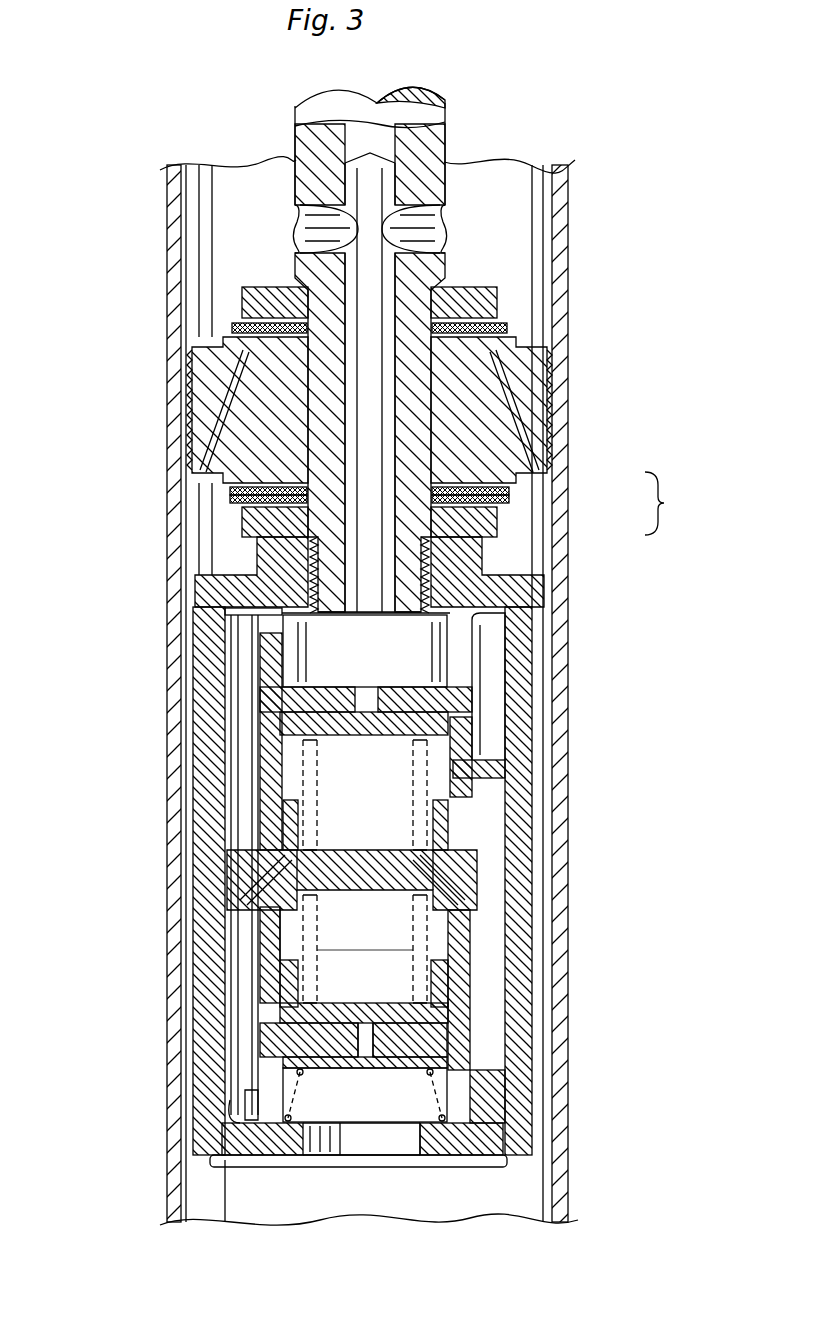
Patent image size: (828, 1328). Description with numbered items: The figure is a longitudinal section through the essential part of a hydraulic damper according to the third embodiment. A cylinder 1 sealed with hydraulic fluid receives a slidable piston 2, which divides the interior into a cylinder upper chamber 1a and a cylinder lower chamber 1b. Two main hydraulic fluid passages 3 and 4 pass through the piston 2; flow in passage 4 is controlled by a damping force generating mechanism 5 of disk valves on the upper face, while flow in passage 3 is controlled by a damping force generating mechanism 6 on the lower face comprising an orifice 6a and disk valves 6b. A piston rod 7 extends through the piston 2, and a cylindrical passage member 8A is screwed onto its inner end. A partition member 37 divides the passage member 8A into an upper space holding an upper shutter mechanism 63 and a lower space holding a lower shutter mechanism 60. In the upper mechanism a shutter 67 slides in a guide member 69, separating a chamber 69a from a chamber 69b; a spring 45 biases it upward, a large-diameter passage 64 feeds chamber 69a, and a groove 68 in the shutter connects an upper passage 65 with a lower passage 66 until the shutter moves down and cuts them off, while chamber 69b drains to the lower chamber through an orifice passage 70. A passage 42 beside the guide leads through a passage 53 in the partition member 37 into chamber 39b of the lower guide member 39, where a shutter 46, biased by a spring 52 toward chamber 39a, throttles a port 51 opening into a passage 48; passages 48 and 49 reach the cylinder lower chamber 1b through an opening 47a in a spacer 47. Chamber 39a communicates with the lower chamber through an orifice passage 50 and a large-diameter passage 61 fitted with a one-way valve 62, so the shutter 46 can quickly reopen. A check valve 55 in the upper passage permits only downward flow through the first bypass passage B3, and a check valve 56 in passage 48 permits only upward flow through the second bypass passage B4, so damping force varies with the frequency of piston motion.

The cylinder 1 is at (560, 168).
The cylinder upper chamber 1a is at (510, 182).
The cylinder lower chamber 1b is at (222, 1215).
The piston 2 is at (535, 380).
The main hydraulic fluid passage 3 is at (530, 332).
The main hydraulic fluid passage 4 is at (232, 484).
The damping force generating mechanism 5 is at (232, 328).
The damping force generating mechanism 6 is at (675, 503).
The orifice 6a is at (500, 492).
The disk valves 6b is at (500, 504).
The piston rod 7 is at (303, 100).
The cylindrical passage member 8A is at (530, 600).
The partition member 37 is at (262, 908).
The guide member 39 is at (470, 1043).
The chamber 39a is at (440, 1065).
The chamber 39b is at (383, 980).
The passage 42 is at (245, 752).
The spring 45 is at (265, 880).
The shutter 46 is at (240, 1052).
The spacer 47 is at (503, 1153).
The opening 47a is at (400, 1125).
The passage 48 is at (262, 1083).
The passage 49 is at (487, 1107).
The orifice passage 50 is at (360, 1060).
The port 51 is at (290, 1015).
The spring 52 is at (455, 990).
The passage 53 is at (283, 985).
The check valve 55 is at (477, 670).
The check valve 56 is at (243, 1130).
The lower shutter mechanism 60 is at (488, 1025).
The passage 61 is at (395, 1100).
The one-way valve 62 is at (330, 1130).
The upper shutter mechanism 63 is at (490, 747).
The passage 64 is at (345, 690).
The upper passage 65 is at (490, 700).
The lower passage 66 is at (493, 817).
The shutter 67 is at (215, 722).
The groove 68 is at (292, 790).
The guide member 69 is at (470, 713).
The chamber 69a is at (285, 700).
The chamber 69b is at (275, 835).
The orifice passage 70 is at (470, 900).
The first bypass passage B3 is at (498, 880).
The second bypass passage B4 is at (272, 945).